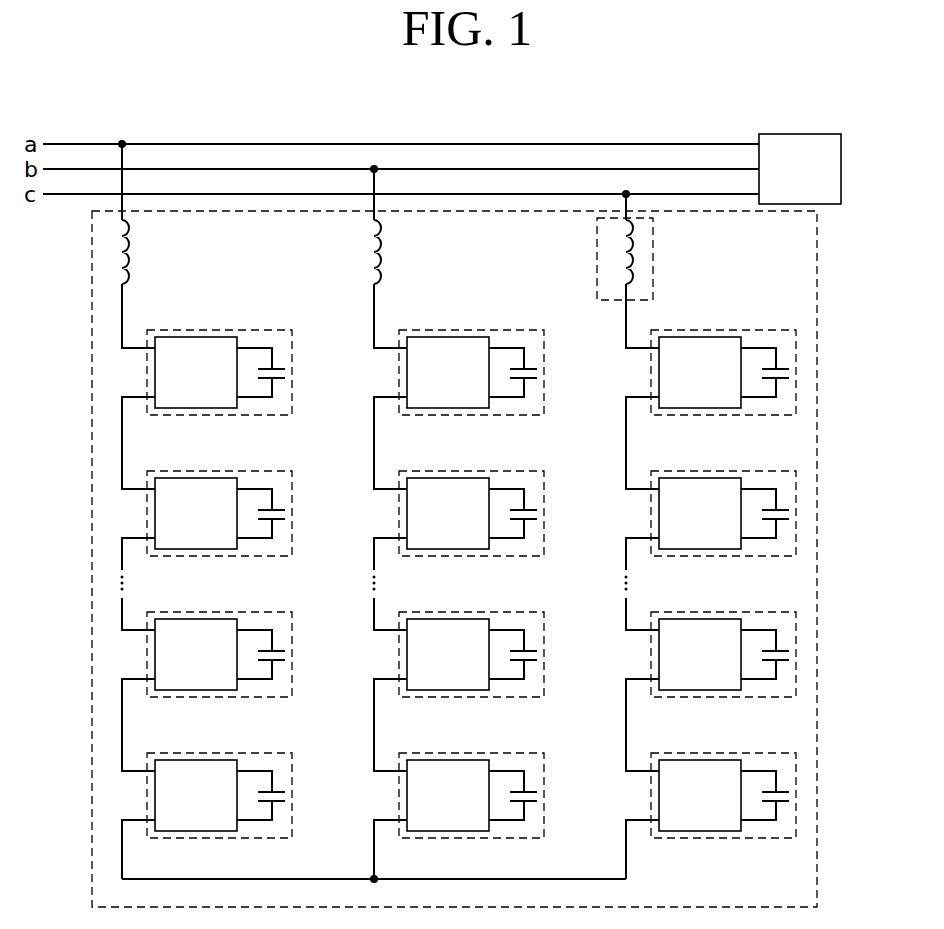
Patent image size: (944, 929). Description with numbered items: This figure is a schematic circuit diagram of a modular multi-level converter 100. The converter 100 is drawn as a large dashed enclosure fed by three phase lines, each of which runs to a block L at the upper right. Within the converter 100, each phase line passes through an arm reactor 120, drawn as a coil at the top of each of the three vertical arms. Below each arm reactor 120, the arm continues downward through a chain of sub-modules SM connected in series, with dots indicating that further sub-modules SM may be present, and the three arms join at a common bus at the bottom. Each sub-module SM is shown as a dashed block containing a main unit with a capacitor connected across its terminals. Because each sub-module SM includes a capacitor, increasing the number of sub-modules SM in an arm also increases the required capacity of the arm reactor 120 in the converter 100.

The modular multi-level converter 100 is at (817, 377).
The arm reactor 120 is at (653, 250).
The sub-module SM is at (796, 515).
The load L is at (800, 169).